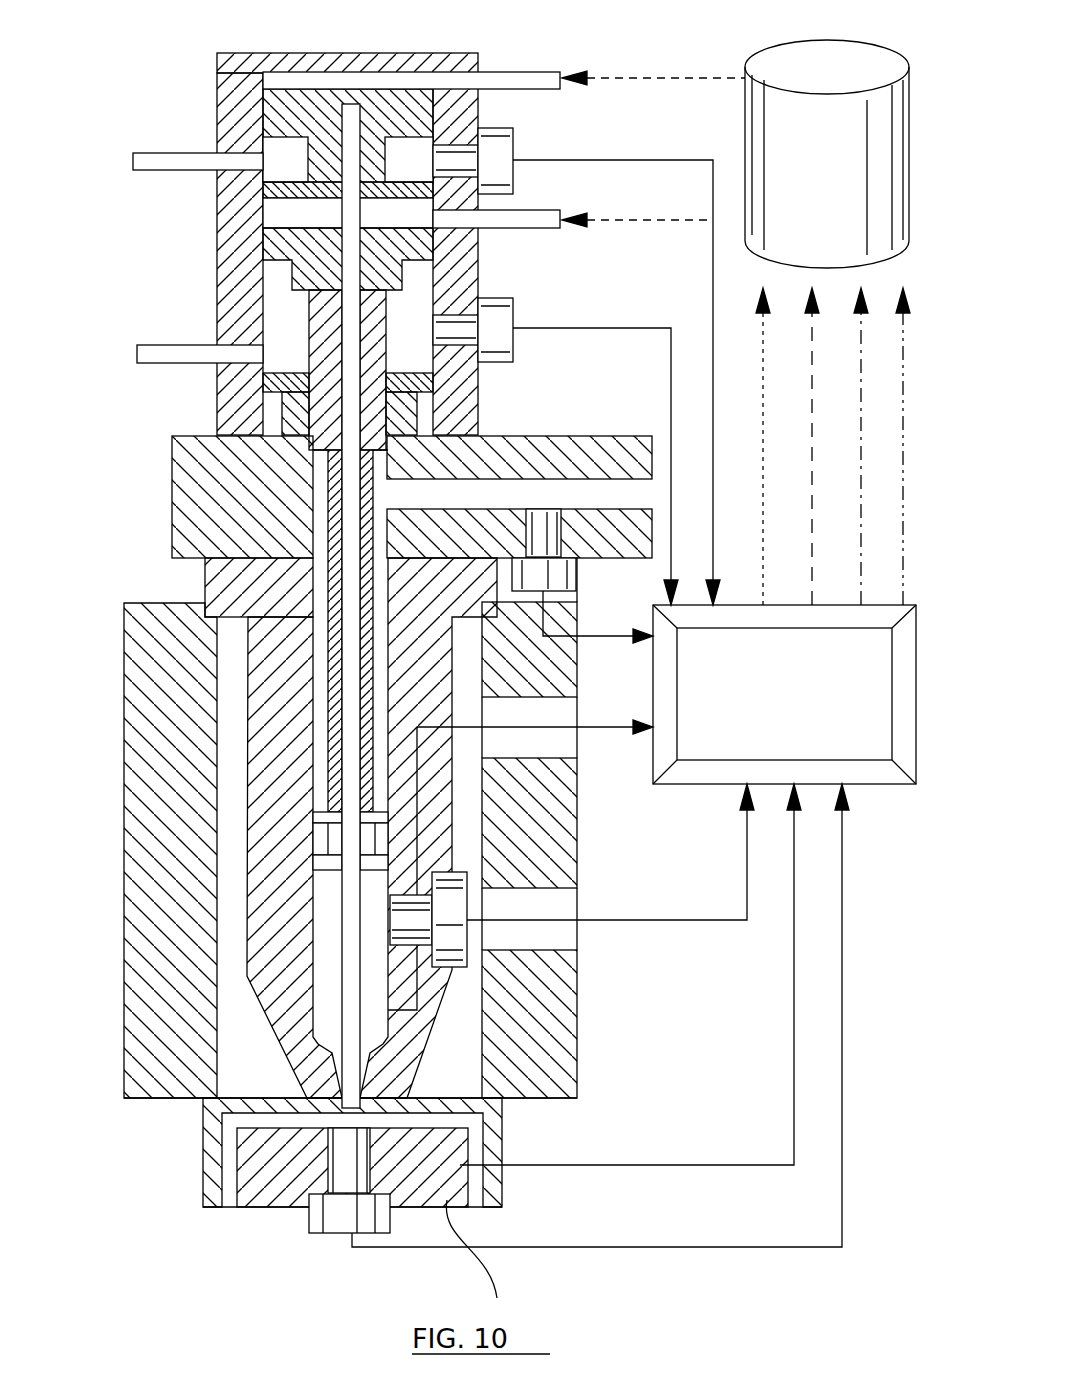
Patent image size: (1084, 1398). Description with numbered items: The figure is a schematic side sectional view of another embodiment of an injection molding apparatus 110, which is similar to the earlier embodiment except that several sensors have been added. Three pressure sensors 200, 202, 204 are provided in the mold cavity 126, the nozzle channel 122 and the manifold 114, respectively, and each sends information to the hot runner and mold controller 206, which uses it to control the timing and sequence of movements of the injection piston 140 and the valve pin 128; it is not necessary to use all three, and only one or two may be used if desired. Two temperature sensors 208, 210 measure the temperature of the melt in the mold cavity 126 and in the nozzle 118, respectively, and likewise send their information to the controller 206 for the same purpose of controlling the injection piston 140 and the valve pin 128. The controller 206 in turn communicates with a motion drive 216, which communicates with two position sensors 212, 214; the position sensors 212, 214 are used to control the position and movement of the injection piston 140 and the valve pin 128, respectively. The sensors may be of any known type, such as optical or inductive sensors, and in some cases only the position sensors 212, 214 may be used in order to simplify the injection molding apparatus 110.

The injection molding apparatus 110 is at (160, 104).
The manifold 114 is at (630, 500).
The nozzle 118 is at (278, 787).
The nozzle channel 122 is at (320, 908).
The mold cavity 126 is at (228, 1137).
The valve pin 128 is at (317, 603).
The injection piston 140 is at (330, 413).
The pressure sensor 200 is at (325, 1218).
The pressure sensor 202 is at (455, 967).
The pressure sensor 204 is at (577, 573).
The hot runner and mold controller 206 is at (758, 712).
The temperature sensor 208 is at (470, 1188).
The temperature sensor 210 is at (395, 1017).
The position sensor 212 is at (505, 317).
The position sensor 214 is at (505, 150).
The motion drive 216 is at (804, 201).